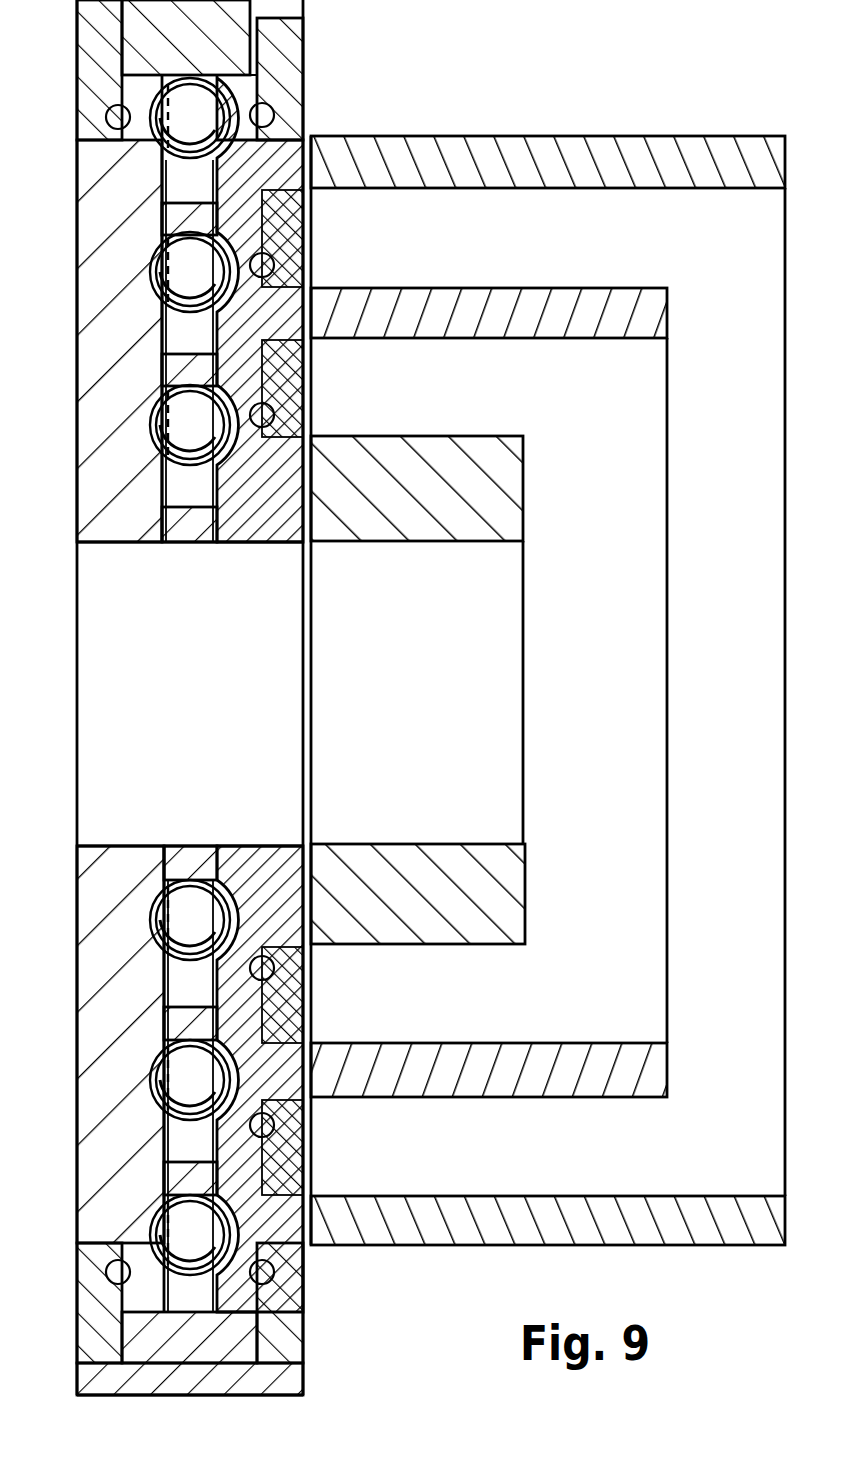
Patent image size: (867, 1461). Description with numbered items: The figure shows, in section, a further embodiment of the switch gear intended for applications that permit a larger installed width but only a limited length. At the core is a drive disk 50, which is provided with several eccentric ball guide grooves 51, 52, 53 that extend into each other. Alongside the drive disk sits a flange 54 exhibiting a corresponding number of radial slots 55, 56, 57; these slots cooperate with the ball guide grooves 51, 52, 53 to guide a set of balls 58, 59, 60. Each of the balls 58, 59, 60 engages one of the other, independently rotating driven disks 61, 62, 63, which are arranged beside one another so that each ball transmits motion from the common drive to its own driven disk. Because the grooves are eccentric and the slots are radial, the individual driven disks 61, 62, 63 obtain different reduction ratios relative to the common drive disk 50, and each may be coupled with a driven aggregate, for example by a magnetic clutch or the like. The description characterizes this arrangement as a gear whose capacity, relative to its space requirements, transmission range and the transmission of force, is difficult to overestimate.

The drive disk 50 is at (95, 875).
The eccentric ball guide groove 51 is at (150, 136).
The eccentric ball guide groove 52 is at (150, 272).
The eccentric ball guide groove 53 is at (152, 425).
The flange 54 is at (165, 228).
The radial slot 55 is at (160, 172).
The radial slot 56 is at (170, 337).
The radial slot 57 is at (170, 515).
The ball 58 is at (150, 1232).
The ball 59 is at (150, 1082).
The ball 60 is at (180, 922).
The driven disk 61 is at (266, 150).
The driven disk 62 is at (298, 274).
The driven disk 63 is at (272, 466).